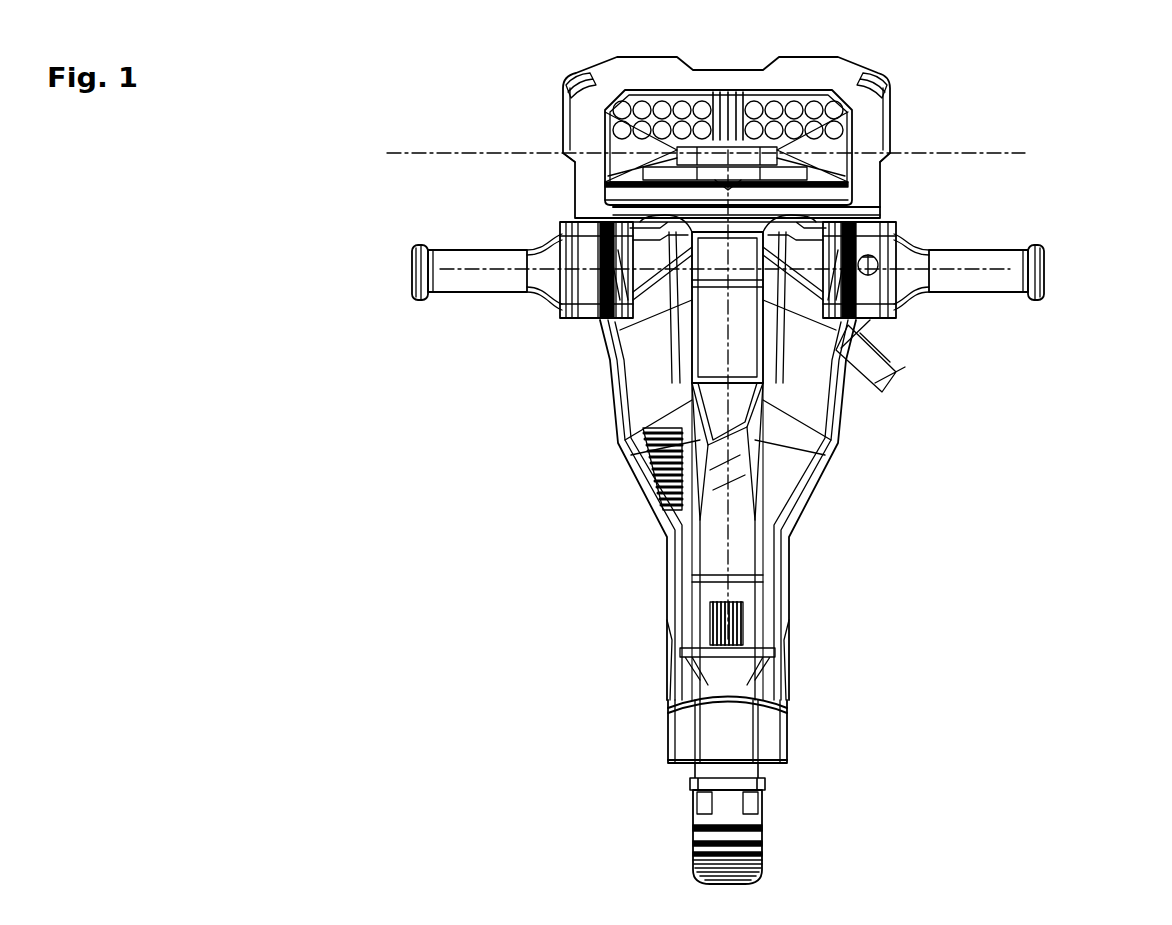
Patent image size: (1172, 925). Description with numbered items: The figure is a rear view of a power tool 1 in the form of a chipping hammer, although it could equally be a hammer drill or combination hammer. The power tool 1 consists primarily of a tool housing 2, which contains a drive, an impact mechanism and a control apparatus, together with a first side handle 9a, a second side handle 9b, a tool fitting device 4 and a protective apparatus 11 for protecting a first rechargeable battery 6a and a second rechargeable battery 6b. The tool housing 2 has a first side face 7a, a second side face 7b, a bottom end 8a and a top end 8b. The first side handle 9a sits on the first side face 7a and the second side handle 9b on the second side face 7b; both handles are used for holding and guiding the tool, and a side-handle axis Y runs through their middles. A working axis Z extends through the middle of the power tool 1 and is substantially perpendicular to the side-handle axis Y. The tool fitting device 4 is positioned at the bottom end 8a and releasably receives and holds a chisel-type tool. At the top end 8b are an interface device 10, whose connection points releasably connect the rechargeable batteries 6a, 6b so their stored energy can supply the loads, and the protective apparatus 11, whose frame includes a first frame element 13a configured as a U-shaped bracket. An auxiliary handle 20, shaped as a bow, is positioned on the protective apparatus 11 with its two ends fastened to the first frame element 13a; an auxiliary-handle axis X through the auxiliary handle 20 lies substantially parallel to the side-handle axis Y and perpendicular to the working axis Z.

The power tool 1 is at (1030, 415).
The tool housing 2 is at (798, 465).
The tool fitting device 4 is at (715, 750).
The first rechargeable battery 6a is at (565, 80).
The second rechargeable battery 6b is at (890, 80).
The first side face 7a is at (606, 420).
The second side face 7b is at (848, 425).
The bottom end 8a is at (790, 710).
The top end 8b is at (565, 228).
The first side handle 9a is at (450, 288).
The second side handle 9b is at (965, 283).
The interface device 10 is at (830, 212).
The protective apparatus 11 is at (995, 125).
The first frame element 13a is at (575, 125).
The auxiliary handle 20 is at (745, 150).
The auxiliary-handle axis X is at (390, 155).
The side-handle axis Y is at (470, 272).
The working axis Z is at (732, 538).